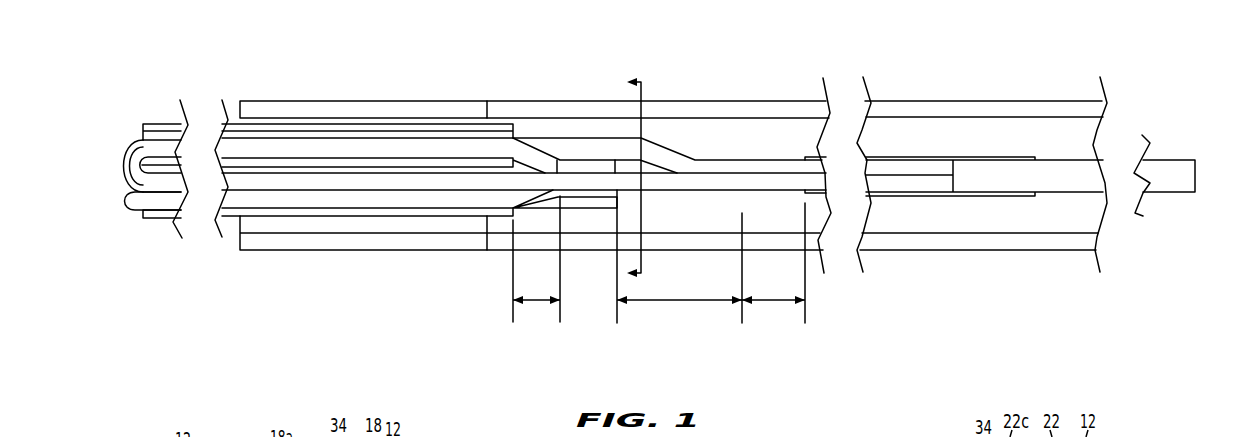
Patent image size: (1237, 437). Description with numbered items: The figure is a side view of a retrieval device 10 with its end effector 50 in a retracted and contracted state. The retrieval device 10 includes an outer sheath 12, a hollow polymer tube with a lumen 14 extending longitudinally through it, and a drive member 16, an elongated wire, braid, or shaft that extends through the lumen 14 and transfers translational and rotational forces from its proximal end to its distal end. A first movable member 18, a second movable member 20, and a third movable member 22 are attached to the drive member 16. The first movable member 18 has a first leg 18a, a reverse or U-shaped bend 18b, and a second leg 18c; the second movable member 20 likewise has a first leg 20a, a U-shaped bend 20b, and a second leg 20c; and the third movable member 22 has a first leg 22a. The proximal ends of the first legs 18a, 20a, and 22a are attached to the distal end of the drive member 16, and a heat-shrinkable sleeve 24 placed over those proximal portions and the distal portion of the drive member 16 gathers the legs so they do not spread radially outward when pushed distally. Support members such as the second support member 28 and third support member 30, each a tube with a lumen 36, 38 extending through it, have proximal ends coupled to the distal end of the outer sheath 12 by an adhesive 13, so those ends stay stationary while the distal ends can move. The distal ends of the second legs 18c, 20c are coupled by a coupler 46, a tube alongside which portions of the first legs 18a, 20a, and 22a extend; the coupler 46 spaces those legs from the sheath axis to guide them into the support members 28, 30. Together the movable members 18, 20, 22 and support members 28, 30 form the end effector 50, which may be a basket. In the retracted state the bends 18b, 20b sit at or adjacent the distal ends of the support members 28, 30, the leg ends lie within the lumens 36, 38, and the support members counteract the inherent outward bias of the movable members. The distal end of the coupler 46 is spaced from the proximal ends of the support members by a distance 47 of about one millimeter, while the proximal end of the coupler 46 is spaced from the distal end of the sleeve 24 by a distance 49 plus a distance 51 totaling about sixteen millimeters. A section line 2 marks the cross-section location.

The section line 2- 2 is at (641, 172).
The retrieval device 10 is at (607, 258).
The outer sheath 12 is at (602, 101).
The adhesive 13 is at (323, 228).
The lumen 14 is at (707, 135).
The drive member 16 is at (1073, 192).
The first movable member 18 is at (580, 212).
The first leg 18a is at (513, 210).
The U-shaped bend 18b is at (131, 197).
The second leg 18c is at (282, 210).
The second movable member 20 is at (775, 191).
The first leg 20a is at (620, 197).
The U-shaped bend 20b is at (122, 173).
The second leg 20c is at (325, 140).
The third movable member 22 is at (732, 152).
The first leg 22a is at (527, 138).
The sleeve 24 is at (910, 153).
The second support member 28 is at (400, 218).
The third support member 30 is at (410, 118).
The lumen 36 is at (163, 133).
The lumen 38 is at (428, 207).
The coupler 46 is at (585, 157).
The distance 47 is at (537, 305).
The distance 49 is at (708, 303).
The end effector 50 is at (128, 108).
The distance 51 is at (767, 303).